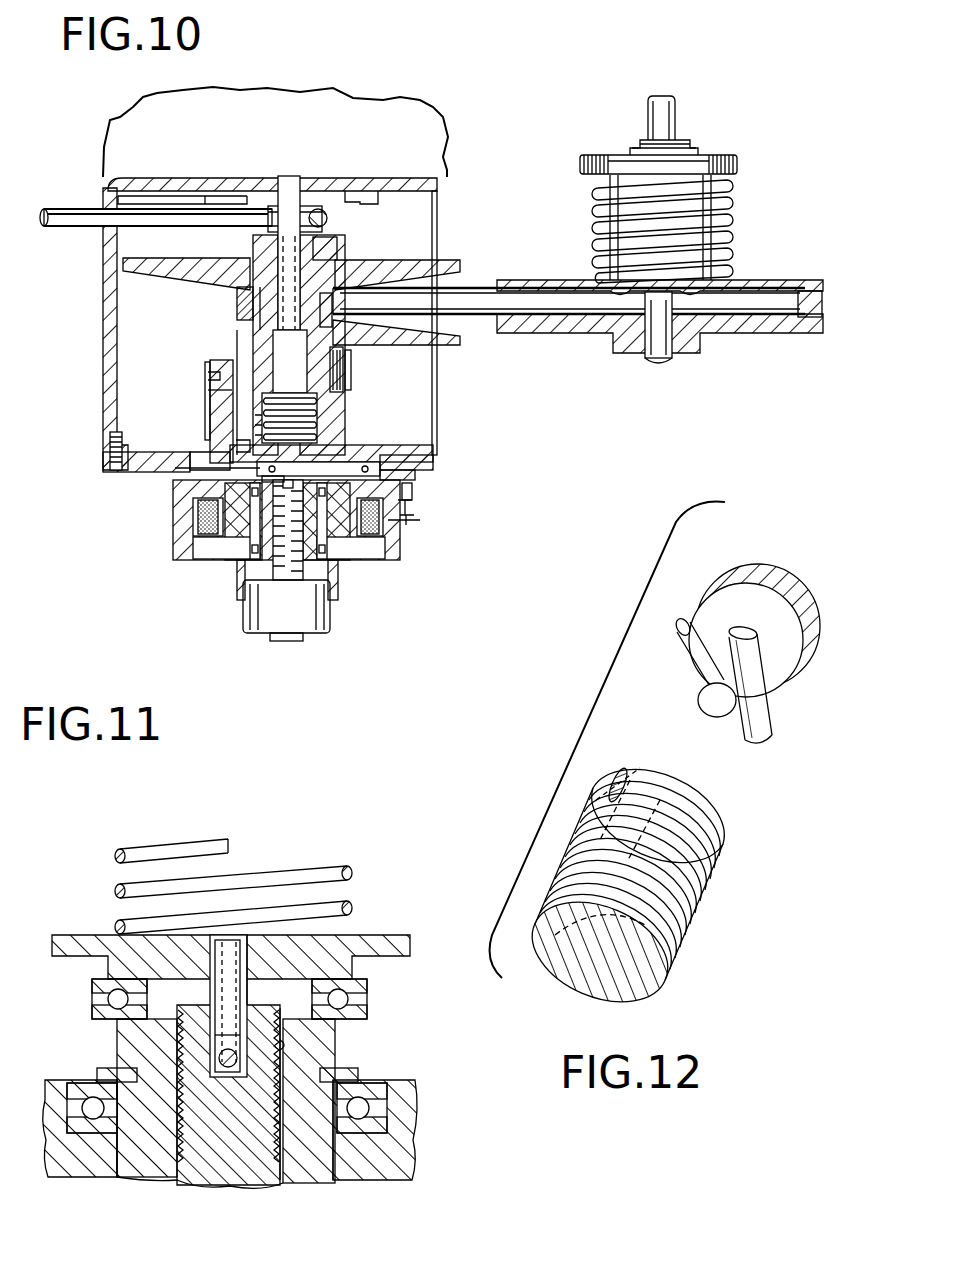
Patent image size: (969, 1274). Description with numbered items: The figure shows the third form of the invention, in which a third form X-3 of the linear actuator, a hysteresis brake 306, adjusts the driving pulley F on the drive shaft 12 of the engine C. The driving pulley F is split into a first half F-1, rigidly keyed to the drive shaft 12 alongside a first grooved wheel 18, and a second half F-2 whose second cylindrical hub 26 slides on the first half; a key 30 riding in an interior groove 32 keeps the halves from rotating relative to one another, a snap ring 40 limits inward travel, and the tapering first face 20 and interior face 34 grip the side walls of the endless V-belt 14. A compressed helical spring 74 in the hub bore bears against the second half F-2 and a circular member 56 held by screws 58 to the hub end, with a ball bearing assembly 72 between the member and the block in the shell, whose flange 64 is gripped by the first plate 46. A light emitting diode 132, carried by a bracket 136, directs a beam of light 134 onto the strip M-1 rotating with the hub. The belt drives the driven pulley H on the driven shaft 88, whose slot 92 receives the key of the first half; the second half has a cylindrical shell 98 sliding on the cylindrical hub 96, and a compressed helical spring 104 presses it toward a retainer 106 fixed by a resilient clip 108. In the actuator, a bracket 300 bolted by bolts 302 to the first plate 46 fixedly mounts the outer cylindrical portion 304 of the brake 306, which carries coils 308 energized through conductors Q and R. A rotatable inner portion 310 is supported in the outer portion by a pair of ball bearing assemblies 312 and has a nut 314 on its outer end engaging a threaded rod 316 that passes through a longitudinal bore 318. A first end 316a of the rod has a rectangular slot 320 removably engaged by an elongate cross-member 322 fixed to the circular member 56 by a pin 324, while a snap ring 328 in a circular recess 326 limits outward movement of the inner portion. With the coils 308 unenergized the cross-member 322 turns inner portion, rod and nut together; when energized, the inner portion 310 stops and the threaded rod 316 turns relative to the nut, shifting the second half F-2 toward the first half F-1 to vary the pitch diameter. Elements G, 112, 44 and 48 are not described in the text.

In FIG. 10, the engine C is at (270, 145).
In FIG. 10, the housing G is at (103, 375).
In FIG. 10, the driving pulley F is at (340, 260).
In FIG. 10, the first half F-1 is at (147, 266).
In FIG. 10, the second half F-2 is at (117, 345).
In FIG. 10, the conduit 112 is at (66, 209).
In FIG. 10, the bracket 44 is at (207, 196).
In FIG. 10, the first grooved wheel 18 is at (270, 236).
In FIG. 10, the second cylindrical hub 26 is at (345, 358).
In FIG. 10, the drive shaft 12 is at (289, 177).
In FIG. 10, the first face 20 is at (186, 280).
In FIG. 10, the snap ring 40 is at (237, 315).
In FIG. 10, the interior face 34 is at (180, 318).
In FIG. 10, the endless V-belt 14 is at (522, 316).
In FIG. 10, the driven pulley H is at (566, 340).
In FIG. 10, the driven shaft 88 is at (662, 366).
In FIG. 10, the cylindrical shell 98 is at (598, 218).
In FIG. 10, the compressed helical spring 104 is at (735, 193).
In FIG. 10, the retainer 106 is at (740, 163).
In FIG. 10, the resilient clip 108 is at (697, 150).
In FIG. 10, the cylindrical hub 96 is at (683, 140).
In FIG. 10, the longitudinal slot 92 is at (676, 110).
In FIG. 10, the light emitting diode 132 is at (205, 365).
In FIG. 10, the beam of light 134 is at (210, 402).
In FIG. 10, the bracket 136 is at (205, 420).
In FIG. 10, the conductor Q is at (205, 376).
In FIG. 10, the conductor R is at (200, 391).
In FIG. 10, the screws 58 is at (236, 446).
In FIG. 10, the strip M-1 is at (345, 380).
In FIG. 10, the key 30 is at (345, 366).
In FIG. 10, the interior groove 32 is at (318, 408).
In FIG. 10, the compressed helical spring 74 is at (330, 414).
In FIG. 11, the compressed helical spring 74 is at (352, 872).
In FIG. 10, the circular member 56 is at (340, 446).
In FIG. 11, the circular member 56 is at (345, 948).
In FIG. 12, the circular member 56 is at (788, 590).
In FIG. 10, the ball bearing assembly 72 is at (345, 466).
In FIG. 11, the ball bearing assembly 72 is at (92, 999).
In FIG. 10, the flange 64 is at (410, 462).
In FIG. 10, the bolt 48 is at (110, 456).
In FIG. 10, the first plate 46 is at (190, 478).
In FIG. 10, the linear actuator X-3 is at (293, 551).
In FIG. 10, the bracket 300 is at (415, 476).
In FIG. 10, the outer cylindrical portion 304 is at (400, 552).
In FIG. 11, the outer cylindrical portion 304 is at (408, 1096).
In FIG. 10, the hysteresis brake 306 is at (395, 565).
In FIG. 10, the coils 308 is at (193, 516).
In FIG. 10, the ball bearing assemblies 312 is at (200, 560).
In FIG. 11, the ball bearing assemblies 312 is at (230, 1105).
In FIG. 10, the threaded rod 316 is at (273, 570).
In FIG. 11, the threaded rod 316 is at (238, 1182).
In FIG. 12, the threaded rod 316 is at (662, 962).
In FIG. 11, the first end 316a is at (210, 1000).
In FIG. 10, the longitudinal bore 318 is at (283, 500).
In FIG. 11, the longitudinal bore 318 is at (280, 1062).
In FIG. 10, the slot 320 is at (240, 478).
In FIG. 11, the slot 320 is at (242, 1030).
In FIG. 12, the slot 320 is at (610, 793).
In FIG. 10, the inner portion 310 is at (300, 568).
In FIG. 11, the inner portion 310 is at (305, 1182).
In FIG. 10, the nut 314 is at (330, 615).
In FIG. 10, the bolts 302 is at (412, 488).
In FIG. 11, the cross-member 322 is at (228, 1075).
In FIG. 12, the cross-member 322 is at (764, 732).
In FIG. 11, the pin 324 is at (237, 960).
In FIG. 12, the pin 324 is at (760, 672).
In FIG. 11, the circular recess 326 is at (283, 1062).
In FIG. 11, the snap ring 328 is at (105, 1068).